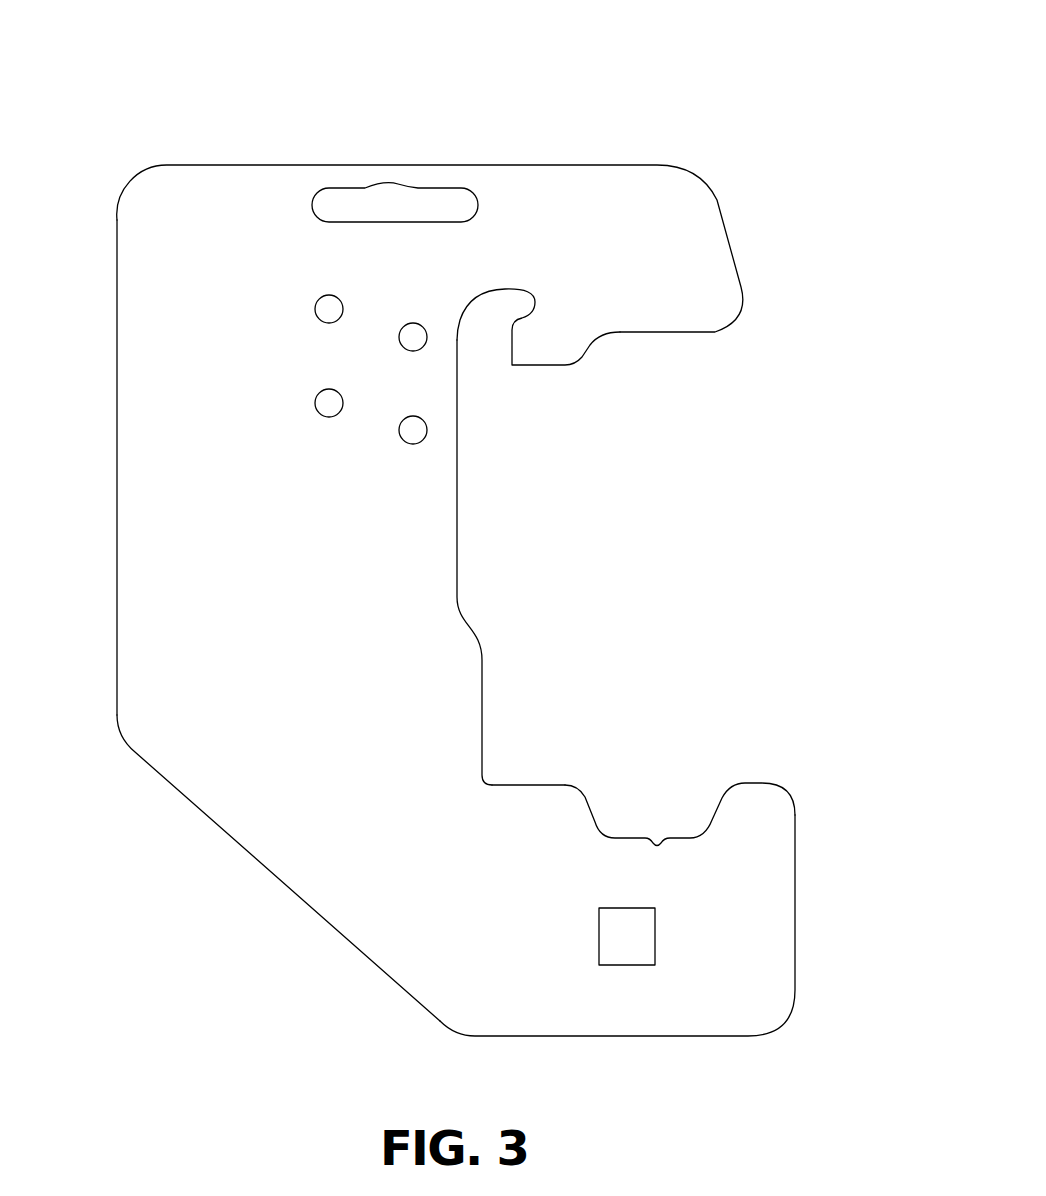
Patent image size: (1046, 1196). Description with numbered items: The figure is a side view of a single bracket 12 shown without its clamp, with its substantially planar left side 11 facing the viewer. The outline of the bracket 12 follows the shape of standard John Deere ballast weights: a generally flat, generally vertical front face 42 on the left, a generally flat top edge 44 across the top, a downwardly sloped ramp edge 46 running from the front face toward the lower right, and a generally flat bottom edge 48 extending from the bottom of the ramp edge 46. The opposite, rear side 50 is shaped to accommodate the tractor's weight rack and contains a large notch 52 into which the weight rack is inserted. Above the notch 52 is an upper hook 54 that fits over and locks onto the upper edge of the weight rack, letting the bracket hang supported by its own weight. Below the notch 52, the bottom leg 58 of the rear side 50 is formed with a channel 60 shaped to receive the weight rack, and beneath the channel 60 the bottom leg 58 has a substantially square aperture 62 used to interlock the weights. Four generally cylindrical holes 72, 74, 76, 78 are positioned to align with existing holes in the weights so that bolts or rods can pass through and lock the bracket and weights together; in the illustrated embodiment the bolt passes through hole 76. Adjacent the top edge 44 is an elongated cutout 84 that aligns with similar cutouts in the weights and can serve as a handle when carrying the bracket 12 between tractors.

The bracket 12 is at (726, 118).
The left side 11 is at (279, 682).
The front face 42 is at (117, 262).
The top edge 44 is at (516, 165).
The ramp edge 46 is at (215, 822).
The bottom edge 48 is at (687, 1036).
The rear side 50 is at (721, 540).
The notch 52 is at (457, 535).
The upper hook 54 is at (508, 368).
The bottom leg 58 is at (541, 784).
The channel 60 is at (659, 785).
The square aperture 62 is at (599, 935).
The cylindrical hole 72 is at (315, 307).
The cylindrical hole 74 is at (415, 323).
The cylindrical hole 76 is at (315, 402).
The cylindrical hole 78 is at (414, 445).
The elongated cutout 84 is at (352, 200).